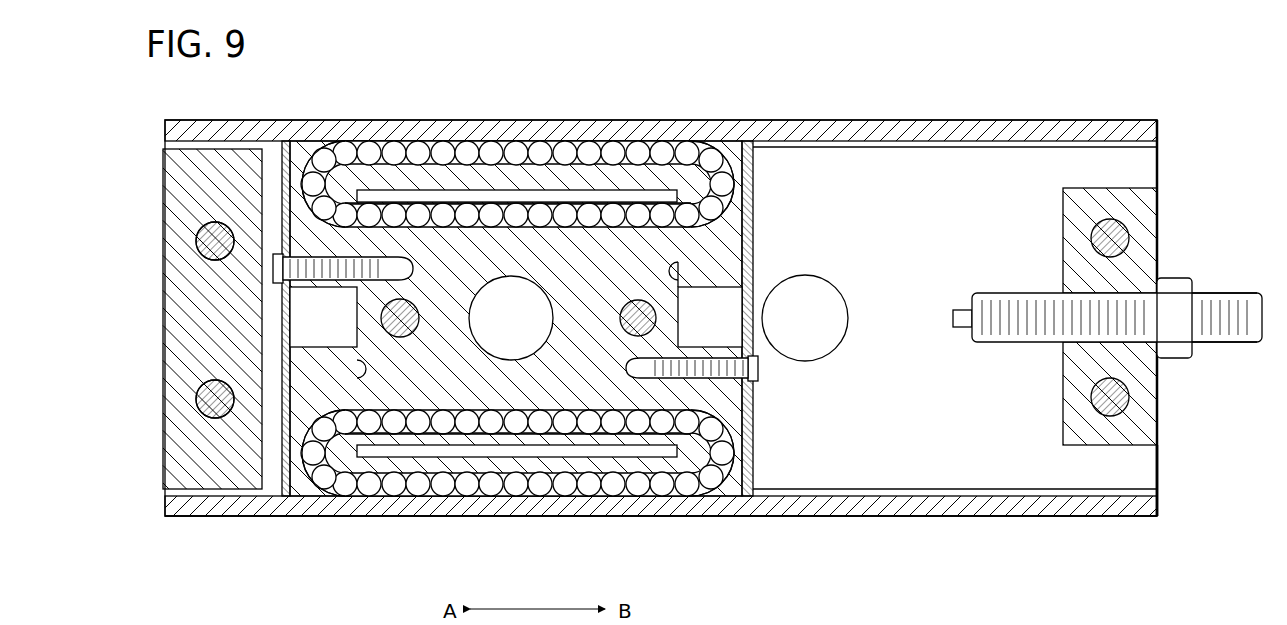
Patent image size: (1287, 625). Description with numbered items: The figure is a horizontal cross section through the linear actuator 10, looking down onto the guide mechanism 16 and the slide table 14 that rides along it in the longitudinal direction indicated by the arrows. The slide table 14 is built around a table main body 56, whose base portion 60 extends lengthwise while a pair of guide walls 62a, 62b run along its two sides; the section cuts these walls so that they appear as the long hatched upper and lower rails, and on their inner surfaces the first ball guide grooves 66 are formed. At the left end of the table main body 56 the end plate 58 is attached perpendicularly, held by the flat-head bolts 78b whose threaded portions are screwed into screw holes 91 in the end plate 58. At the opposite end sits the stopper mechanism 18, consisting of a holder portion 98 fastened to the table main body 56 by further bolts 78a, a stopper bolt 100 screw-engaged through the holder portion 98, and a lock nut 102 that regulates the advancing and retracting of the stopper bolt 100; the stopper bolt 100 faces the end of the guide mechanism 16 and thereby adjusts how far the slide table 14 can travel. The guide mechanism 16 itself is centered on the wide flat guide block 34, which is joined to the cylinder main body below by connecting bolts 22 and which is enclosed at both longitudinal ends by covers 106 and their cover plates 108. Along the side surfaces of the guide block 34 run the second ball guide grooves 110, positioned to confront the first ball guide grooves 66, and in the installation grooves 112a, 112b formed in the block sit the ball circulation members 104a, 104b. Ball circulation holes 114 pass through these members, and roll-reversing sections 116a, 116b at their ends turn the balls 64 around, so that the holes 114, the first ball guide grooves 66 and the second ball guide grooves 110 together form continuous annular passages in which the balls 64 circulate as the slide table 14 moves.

The linear actuator 10 is at (935, 64).
The slide table 14 is at (1016, 520).
The guide mechanism 16 is at (475, 311).
The stopper mechanism 18 is at (1222, 286).
The connecting bolt 22 is at (468, 318).
The guide block 34 is at (590, 178).
The table main body 56 is at (1128, 472).
The end plate 58 is at (165, 470).
The base portion 60 is at (1136, 150).
The guide wall 62a is at (795, 508).
The guide wall 62b is at (795, 130).
The ball 64 is at (466, 150).
The first ball guide groove 66 is at (862, 147).
The bolt 78a is at (1091, 238).
The bolt 78b is at (196, 241).
The screw hole 91 is at (200, 248).
The holder portion 98 is at (1117, 447).
The stopper bolt 100 is at (1246, 344).
The lock nut 102 is at (1180, 360).
The ball circulation member 104a is at (412, 462).
The ball circulation member 104b is at (412, 172).
The cover 106 is at (290, 213).
The cover plate 108 is at (330, 483).
The second ball guide groove 110 is at (516, 142).
The installation groove 112a is at (608, 432).
The installation groove 112b is at (606, 206).
The ball circulation hole 114 is at (550, 185).
The roll-reversing section 116a is at (345, 146).
The roll-reversing section 116b is at (700, 148).